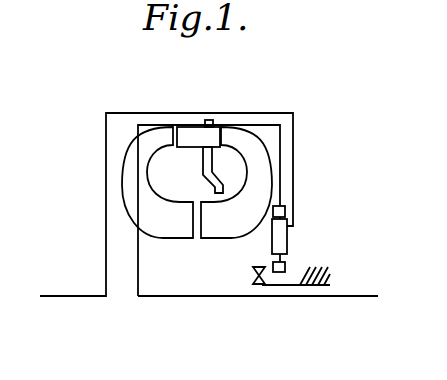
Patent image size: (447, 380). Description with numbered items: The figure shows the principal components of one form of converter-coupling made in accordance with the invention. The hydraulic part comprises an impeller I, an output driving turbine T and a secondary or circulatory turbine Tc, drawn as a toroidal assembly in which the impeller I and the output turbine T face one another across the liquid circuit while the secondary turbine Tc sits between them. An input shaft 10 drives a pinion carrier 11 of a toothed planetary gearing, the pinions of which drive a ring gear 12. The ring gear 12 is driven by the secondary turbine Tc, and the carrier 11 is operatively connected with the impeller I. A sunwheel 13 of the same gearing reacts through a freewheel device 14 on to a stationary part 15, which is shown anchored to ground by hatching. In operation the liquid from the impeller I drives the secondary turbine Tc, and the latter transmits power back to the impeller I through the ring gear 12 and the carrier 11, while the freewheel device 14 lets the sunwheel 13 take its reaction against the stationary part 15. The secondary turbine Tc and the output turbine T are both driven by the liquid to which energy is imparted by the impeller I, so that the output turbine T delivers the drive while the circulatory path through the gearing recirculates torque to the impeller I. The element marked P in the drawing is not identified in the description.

The input shaft 10 is at (62, 296).
The pinion carrier 11 is at (197, 197).
The ring gear 12 is at (287, 210).
The sunwheel 13 is at (287, 260).
The freewheel device 14 is at (259, 284).
The stationary part 15 is at (331, 275).
The pointer screen element P is at (288, 226).
The secondary or circulatory turbine Tc is at (191, 131).
The output driving turbine T is at (157, 182).
The impeller I is at (240, 253).